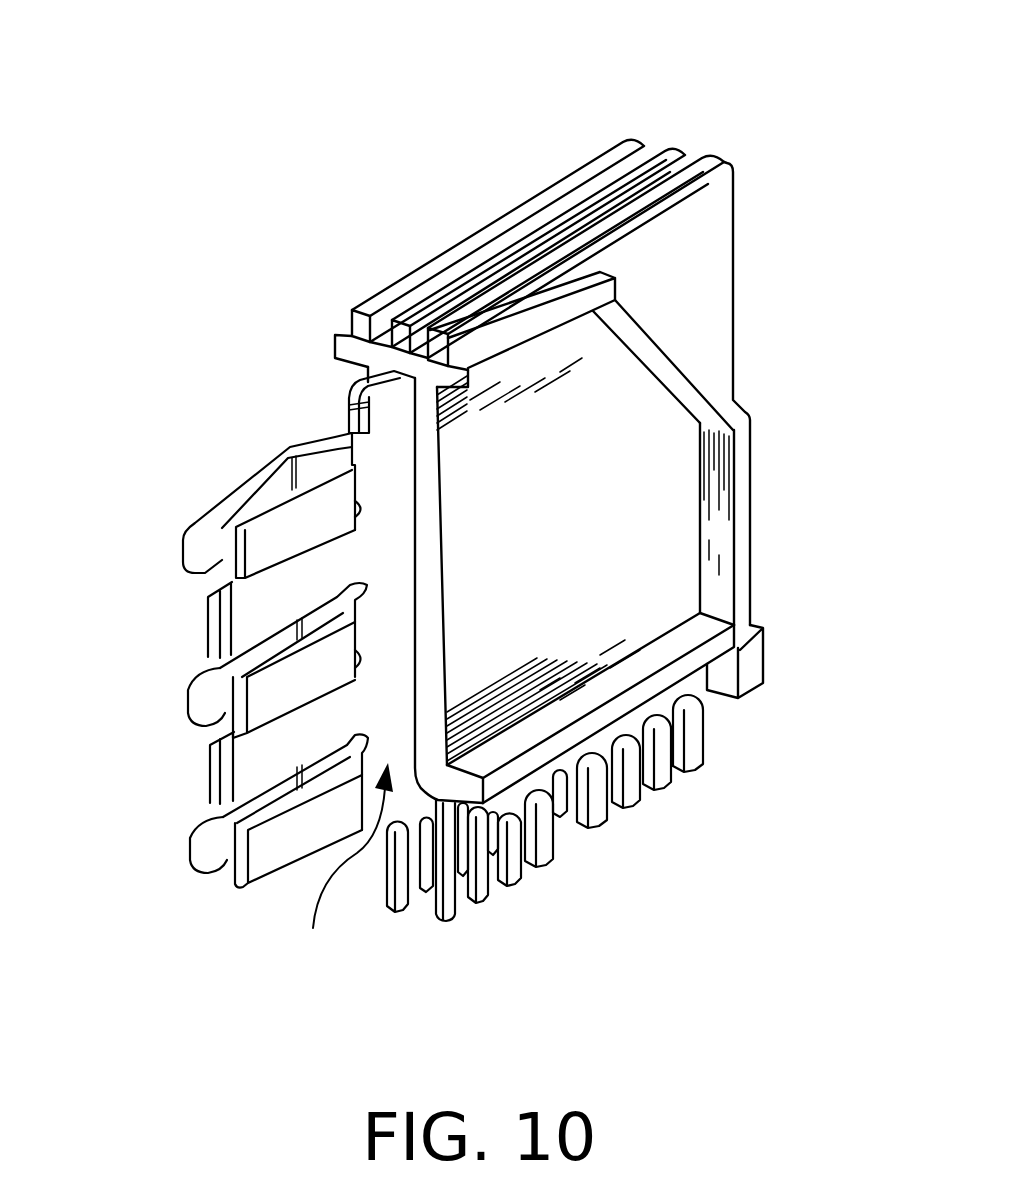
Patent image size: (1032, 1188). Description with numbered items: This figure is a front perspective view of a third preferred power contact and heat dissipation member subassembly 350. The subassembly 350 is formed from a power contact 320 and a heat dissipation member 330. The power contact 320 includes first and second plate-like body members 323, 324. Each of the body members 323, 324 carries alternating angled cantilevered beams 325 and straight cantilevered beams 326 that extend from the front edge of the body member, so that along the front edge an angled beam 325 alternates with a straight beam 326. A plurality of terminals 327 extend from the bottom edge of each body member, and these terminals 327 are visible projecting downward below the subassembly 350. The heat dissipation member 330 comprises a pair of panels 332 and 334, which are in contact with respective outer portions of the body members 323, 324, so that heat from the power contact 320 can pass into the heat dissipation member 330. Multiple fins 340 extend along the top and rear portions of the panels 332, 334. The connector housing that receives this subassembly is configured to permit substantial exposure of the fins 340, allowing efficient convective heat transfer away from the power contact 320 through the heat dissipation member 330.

The subassembly 350 is at (280, 209).
The heat dissipation member 330 is at (646, 115).
The fins 340 is at (708, 163).
The panel 334 is at (373, 372).
The panel 332 is at (677, 535).
The terminals 327 is at (548, 862).
The power contact 320 is at (216, 897).
The first plate-like body member 323 is at (341, 865).
The second plate-like body member 324 is at (332, 413).
The angled cantilevered beam 325 is at (202, 548).
The straight cantilevered beam 326 is at (218, 812).